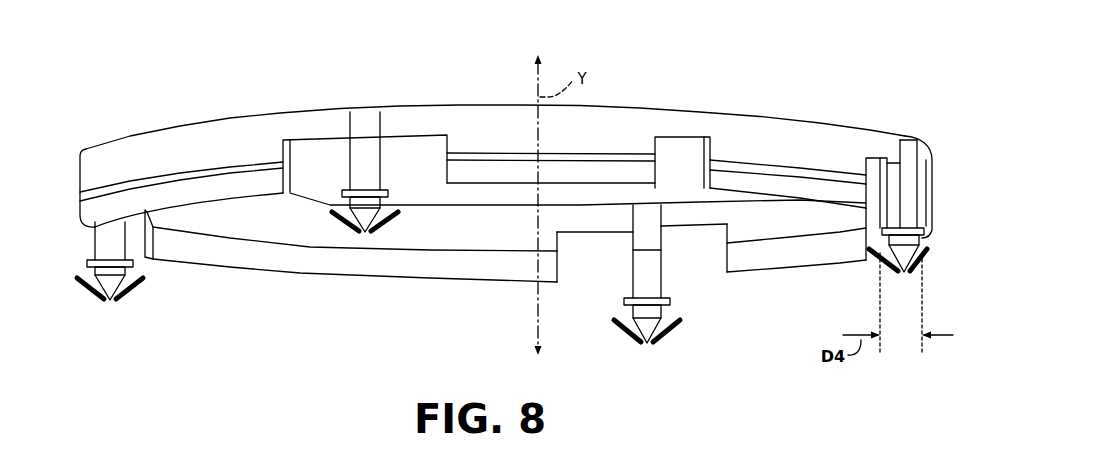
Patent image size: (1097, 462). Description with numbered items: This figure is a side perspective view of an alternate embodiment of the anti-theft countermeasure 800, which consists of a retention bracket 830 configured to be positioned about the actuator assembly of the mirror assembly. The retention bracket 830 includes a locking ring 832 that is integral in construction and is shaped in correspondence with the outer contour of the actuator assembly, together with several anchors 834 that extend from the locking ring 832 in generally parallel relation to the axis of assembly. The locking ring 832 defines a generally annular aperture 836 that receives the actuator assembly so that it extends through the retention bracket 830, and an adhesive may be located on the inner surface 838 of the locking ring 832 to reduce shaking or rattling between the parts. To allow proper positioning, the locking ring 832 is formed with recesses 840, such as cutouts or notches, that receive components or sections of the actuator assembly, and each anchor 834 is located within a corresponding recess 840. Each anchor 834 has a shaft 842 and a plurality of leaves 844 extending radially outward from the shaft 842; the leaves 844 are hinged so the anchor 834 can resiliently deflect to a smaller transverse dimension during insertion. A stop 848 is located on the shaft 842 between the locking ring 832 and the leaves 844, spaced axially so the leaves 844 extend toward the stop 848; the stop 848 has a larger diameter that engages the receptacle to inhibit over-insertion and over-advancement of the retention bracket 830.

The anti-theft countermeasure 800 is at (600, 62).
The retention bracket 830 is at (781, 95).
The locking ring 832 is at (807, 132).
The anchor 834 is at (110, 320).
The annular aperture 836 is at (493, 196).
The inner surface 838 is at (263, 222).
The recess 840 is at (152, 228).
The shaft 842 is at (652, 278).
The leaf 844 is at (661, 321).
The stop 848 is at (90, 263).